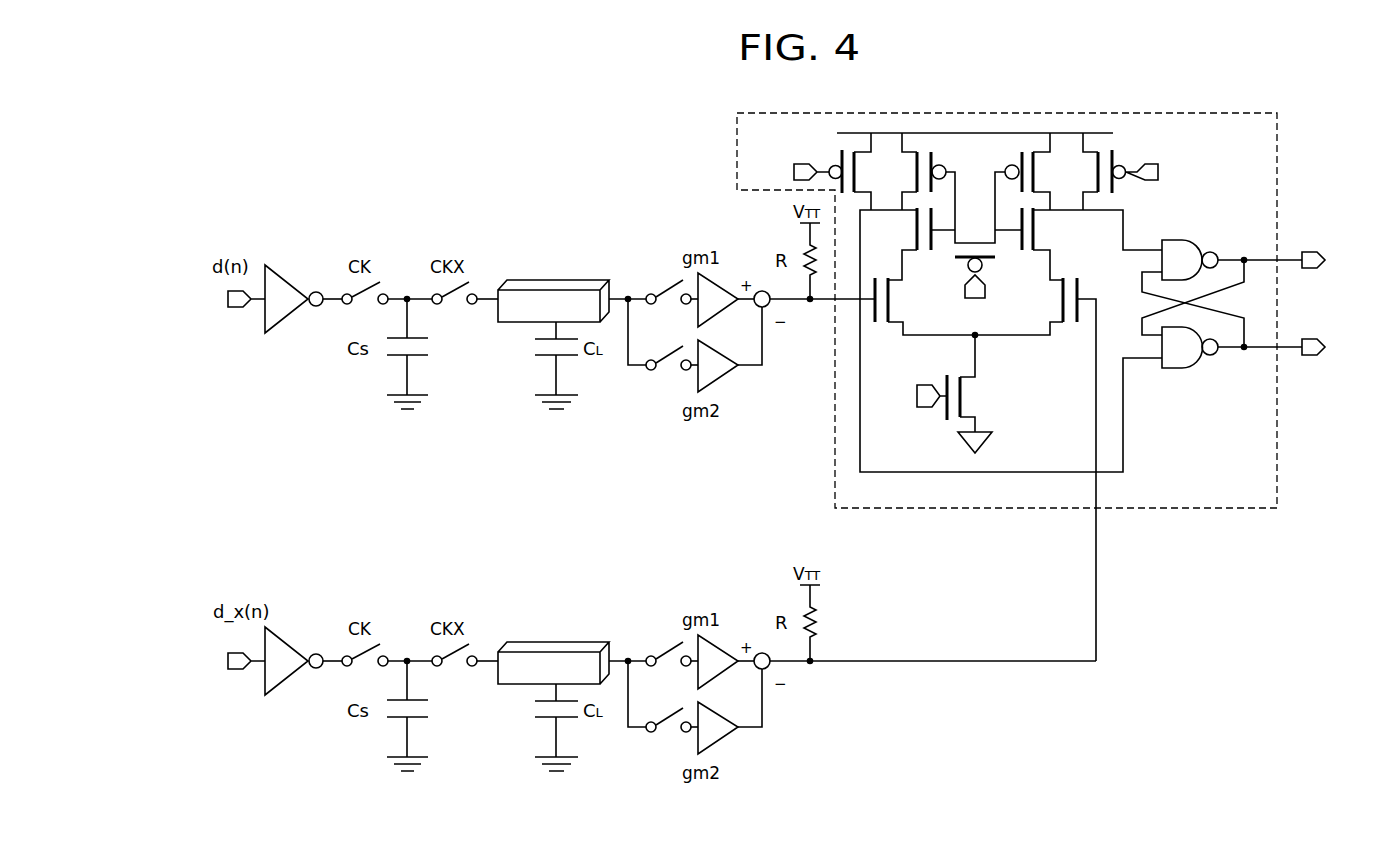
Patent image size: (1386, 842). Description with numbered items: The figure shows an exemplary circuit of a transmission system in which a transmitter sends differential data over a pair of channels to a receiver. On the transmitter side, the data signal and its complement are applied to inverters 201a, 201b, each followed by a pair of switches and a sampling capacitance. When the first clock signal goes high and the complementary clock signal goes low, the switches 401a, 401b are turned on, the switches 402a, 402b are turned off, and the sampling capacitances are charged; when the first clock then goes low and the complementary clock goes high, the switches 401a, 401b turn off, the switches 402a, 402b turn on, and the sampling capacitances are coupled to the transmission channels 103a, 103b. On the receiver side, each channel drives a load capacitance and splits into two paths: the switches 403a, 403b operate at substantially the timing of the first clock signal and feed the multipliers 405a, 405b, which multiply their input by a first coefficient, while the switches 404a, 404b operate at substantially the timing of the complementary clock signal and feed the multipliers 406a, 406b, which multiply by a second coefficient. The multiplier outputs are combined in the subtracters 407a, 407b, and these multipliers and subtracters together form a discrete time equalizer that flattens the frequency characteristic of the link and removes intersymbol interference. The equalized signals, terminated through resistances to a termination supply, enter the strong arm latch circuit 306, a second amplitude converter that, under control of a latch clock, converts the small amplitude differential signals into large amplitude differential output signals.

The inverter 201a is at (283, 275).
The inverter 201b is at (294, 685).
The switch 401a is at (345, 291).
The switch 401b is at (341, 622).
The switch 402a is at (457, 303).
The switch 402b is at (460, 688).
The transmission channel 103a is at (557, 280).
The transmission channel 103b is at (553, 639).
The switch 403a is at (665, 290).
The switch 403b is at (652, 624).
The switch 404a is at (665, 372).
The switch 404b is at (638, 742).
The multiplier 405a is at (740, 287).
The multiplier 405b is at (726, 635).
The multiplier 406a is at (718, 382).
The multiplier 406b is at (753, 738).
The subtracter 407a is at (771, 306).
The subtracter 407b is at (787, 692).
The strong arm latch circuit 306 is at (1187, 510).